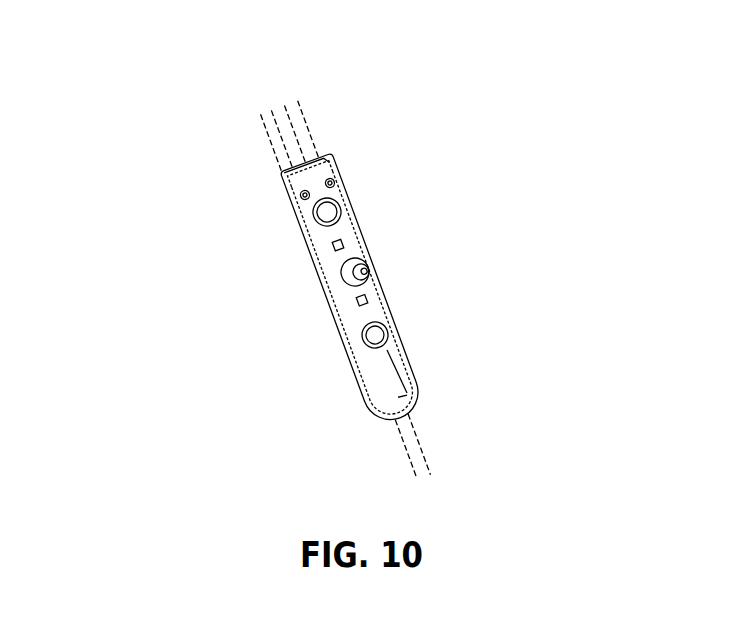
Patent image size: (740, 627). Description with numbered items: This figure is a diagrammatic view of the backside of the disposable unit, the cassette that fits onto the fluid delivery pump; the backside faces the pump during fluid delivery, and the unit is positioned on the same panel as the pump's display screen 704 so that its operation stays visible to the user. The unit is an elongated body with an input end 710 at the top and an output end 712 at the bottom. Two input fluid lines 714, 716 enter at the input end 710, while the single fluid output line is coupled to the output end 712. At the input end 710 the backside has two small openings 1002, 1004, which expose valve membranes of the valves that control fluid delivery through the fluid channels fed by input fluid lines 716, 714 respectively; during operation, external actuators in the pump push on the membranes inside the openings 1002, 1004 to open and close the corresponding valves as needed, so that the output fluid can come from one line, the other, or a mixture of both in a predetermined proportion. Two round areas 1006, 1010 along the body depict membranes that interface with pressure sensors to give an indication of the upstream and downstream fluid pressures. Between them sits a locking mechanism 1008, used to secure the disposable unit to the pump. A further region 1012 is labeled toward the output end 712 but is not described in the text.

The display screen 704 is at (321, 277).
The input end 710 is at (281, 182).
The output end 712 is at (380, 423).
The input fluid line 714 is at (295, 113).
The input fluid line 716 is at (266, 126).
The opening 1002 is at (306, 192).
The opening 1004 is at (333, 184).
The area 1006 is at (330, 213).
The locking mechanism 1008 is at (370, 271).
The area 1010 is at (373, 337).
The recess 1012 is at (386, 377).